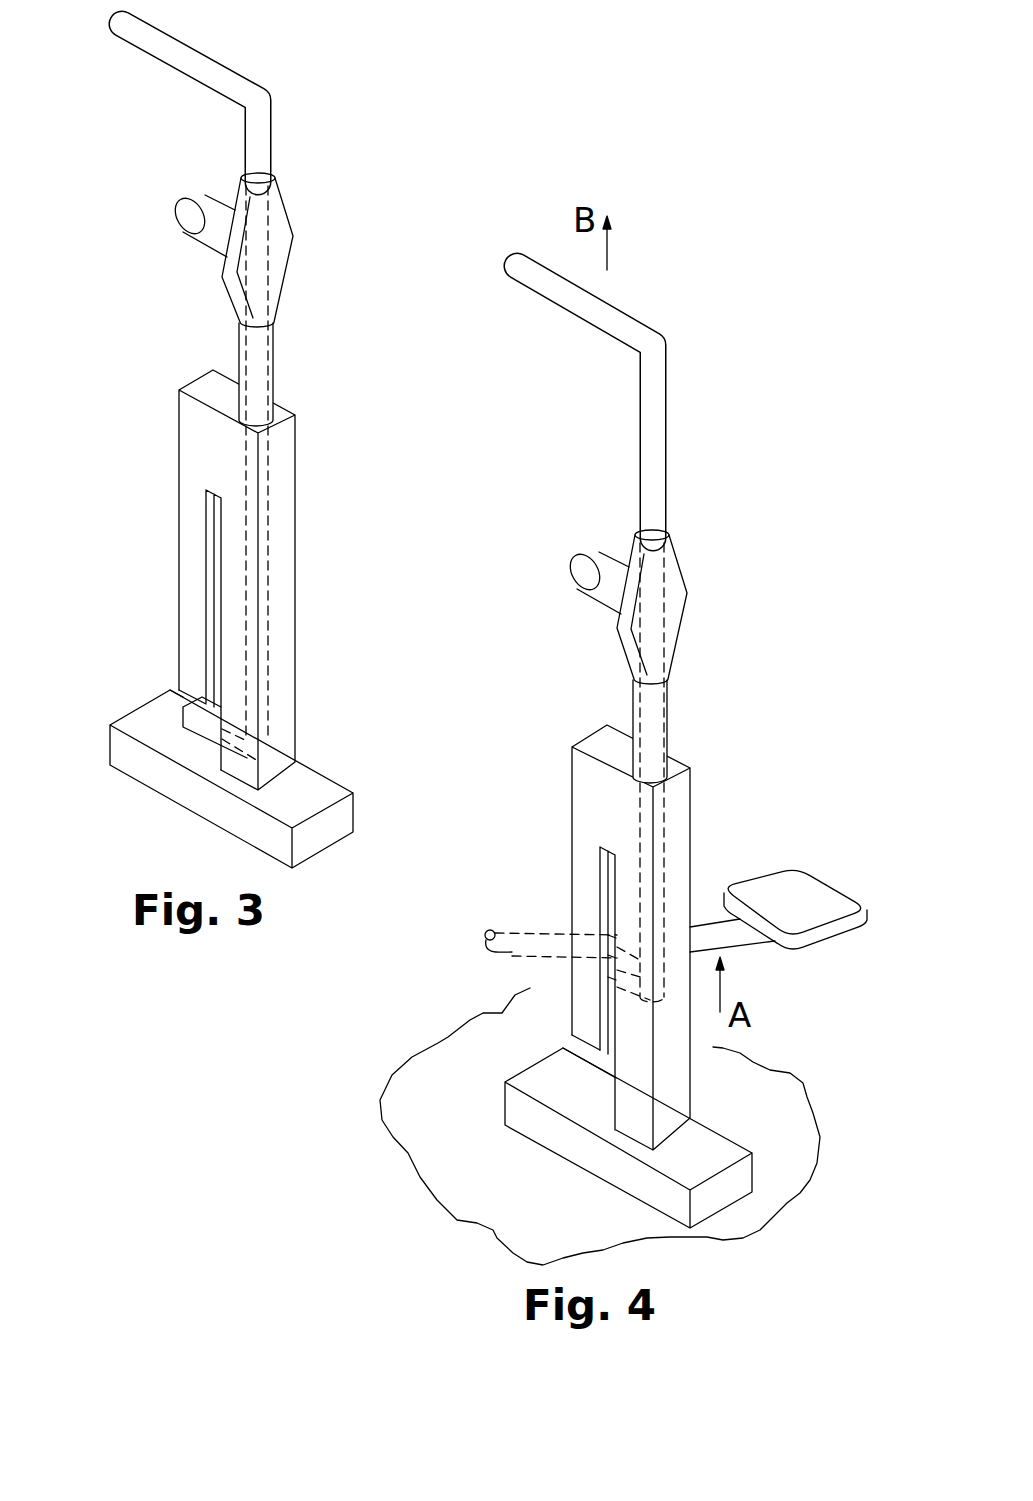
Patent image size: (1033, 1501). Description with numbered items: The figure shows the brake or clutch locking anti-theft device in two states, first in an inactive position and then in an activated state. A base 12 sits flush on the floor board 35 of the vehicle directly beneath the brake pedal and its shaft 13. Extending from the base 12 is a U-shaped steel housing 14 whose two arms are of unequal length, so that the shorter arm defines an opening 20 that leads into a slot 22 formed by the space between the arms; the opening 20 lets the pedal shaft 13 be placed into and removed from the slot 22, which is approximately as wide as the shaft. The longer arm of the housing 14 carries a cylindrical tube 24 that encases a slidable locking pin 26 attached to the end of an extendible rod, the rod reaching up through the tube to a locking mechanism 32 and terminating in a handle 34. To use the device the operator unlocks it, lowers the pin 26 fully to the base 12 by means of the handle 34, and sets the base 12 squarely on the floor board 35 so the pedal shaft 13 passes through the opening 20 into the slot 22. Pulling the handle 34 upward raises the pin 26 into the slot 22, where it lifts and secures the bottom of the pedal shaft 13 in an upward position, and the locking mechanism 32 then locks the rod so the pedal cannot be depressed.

In FIG. 3, the base 12 is at (125, 716).
In FIG. 4, the base 12 is at (533, 1134).
In FIG. 4, the brake pedal shaft 13 is at (518, 956).
In FIG. 3, the U-shaped housing 14 is at (168, 446).
In FIG. 4, the U-shaped housing 14 is at (561, 785).
In FIG. 3, the opening 20 is at (180, 688).
In FIG. 4, the opening 20 is at (571, 1044).
In FIG. 3, the slot 22 is at (210, 558).
In FIG. 4, the slot 22 is at (607, 875).
In FIG. 3, the cylindrical tube 24 is at (273, 367).
In FIG. 4, the cylindrical tube 24 is at (672, 723).
In FIG. 3, the locking pin 26 is at (205, 720).
In FIG. 4, the locking pin 26 is at (610, 980).
In FIG. 3, the locking mechanism 32 is at (293, 247).
In FIG. 4, the locking mechanism 32 is at (677, 578).
In FIG. 4, the handle 34 is at (636, 292).
In FIG. 4, the floor board 35 is at (803, 1081).